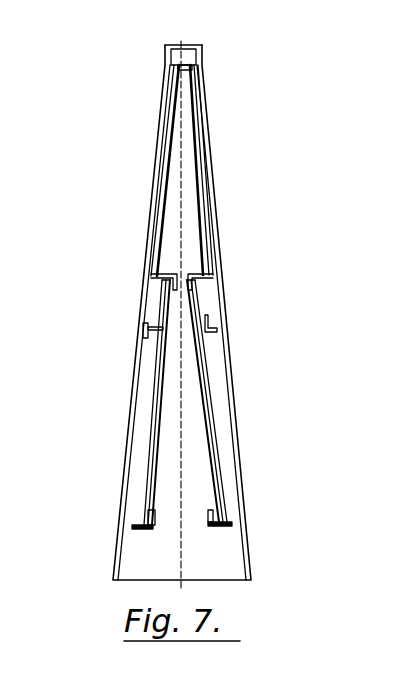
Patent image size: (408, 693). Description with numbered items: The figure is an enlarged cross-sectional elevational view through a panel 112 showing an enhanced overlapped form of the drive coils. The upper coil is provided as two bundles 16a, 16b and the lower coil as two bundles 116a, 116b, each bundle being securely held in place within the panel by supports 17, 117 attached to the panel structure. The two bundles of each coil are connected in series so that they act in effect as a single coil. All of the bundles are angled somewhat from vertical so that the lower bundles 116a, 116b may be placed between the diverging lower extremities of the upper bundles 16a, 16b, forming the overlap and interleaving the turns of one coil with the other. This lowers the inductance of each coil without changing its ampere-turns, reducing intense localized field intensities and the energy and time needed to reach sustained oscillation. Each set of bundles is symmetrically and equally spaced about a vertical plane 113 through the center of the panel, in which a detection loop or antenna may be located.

The panel 112 is at (130, 98).
The vertical plane 113 is at (180, 527).
The support 17 is at (195, 48).
The upper coil bundle 16a is at (163, 207).
The upper coil bundle 16b is at (205, 175).
The lower coil bundle 116a is at (153, 437).
The lower coil bundle 116b is at (208, 380).
The support 117 is at (148, 333).